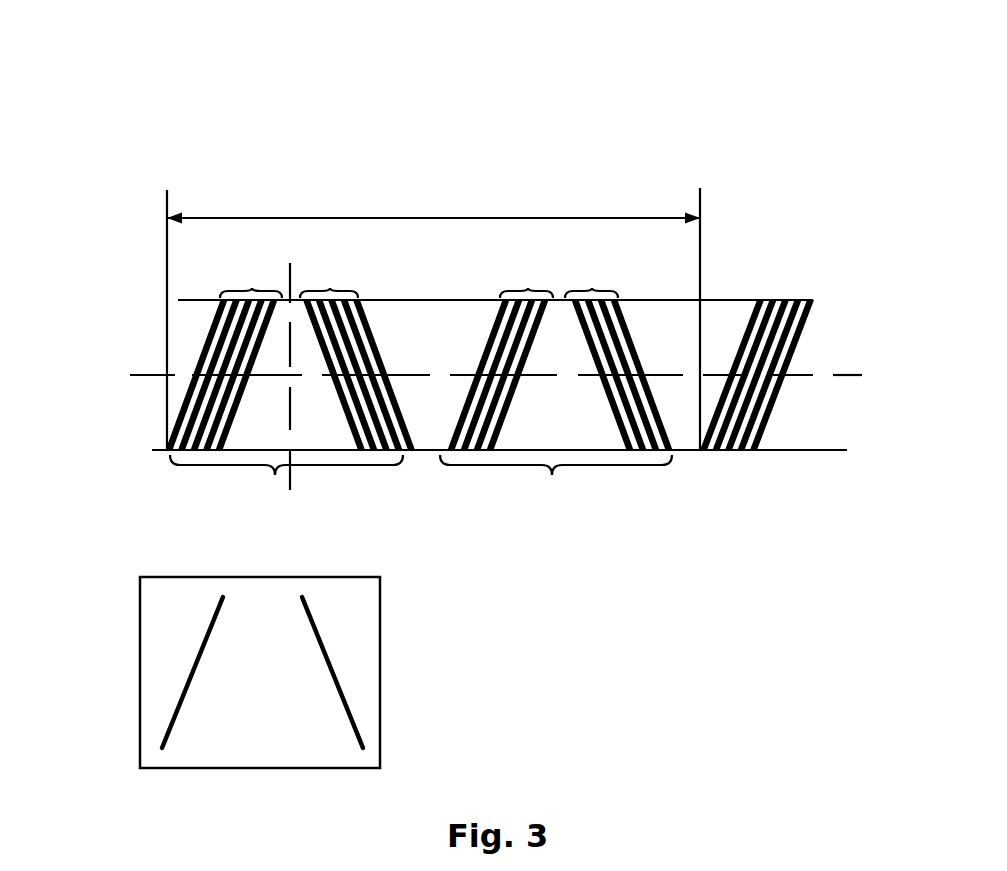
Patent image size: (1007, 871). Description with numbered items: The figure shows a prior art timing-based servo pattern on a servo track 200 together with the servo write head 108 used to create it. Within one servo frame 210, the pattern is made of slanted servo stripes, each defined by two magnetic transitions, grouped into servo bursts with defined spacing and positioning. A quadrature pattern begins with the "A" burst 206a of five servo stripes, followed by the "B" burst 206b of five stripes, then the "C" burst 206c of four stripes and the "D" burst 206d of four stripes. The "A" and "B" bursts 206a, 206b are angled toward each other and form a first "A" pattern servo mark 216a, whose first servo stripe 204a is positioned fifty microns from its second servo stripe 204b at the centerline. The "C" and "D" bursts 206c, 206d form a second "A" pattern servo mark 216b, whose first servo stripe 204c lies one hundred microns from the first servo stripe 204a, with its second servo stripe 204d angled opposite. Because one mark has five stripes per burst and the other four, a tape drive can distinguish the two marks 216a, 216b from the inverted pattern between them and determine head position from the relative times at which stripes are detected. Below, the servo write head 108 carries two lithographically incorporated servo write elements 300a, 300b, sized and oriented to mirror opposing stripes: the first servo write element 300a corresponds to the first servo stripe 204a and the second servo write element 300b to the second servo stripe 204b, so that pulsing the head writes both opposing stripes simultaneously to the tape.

The servo track 200 is at (178, 88).
The servo frame 210 is at (408, 218).
The first servo stripe 204a is at (178, 430).
The second servo stripe 204b is at (358, 429).
The first servo stripe of second "A" pattern servo mark 204c is at (456, 428).
The second servo stripe of second "A" pattern servo mark 204d is at (627, 428).
The "A" burst 206a is at (224, 357).
The "B" burst 206b is at (359, 356).
The "C" burst 206c is at (500, 357).
The "D" burst 206d is at (617, 357).
The first "A" pattern servo mark 216a is at (286, 480).
The second "A" pattern servo mark 216b is at (556, 480).
The servo write head 108 is at (140, 608).
The first servo write element 300a is at (192, 667).
The second servo write element 300b is at (333, 667).